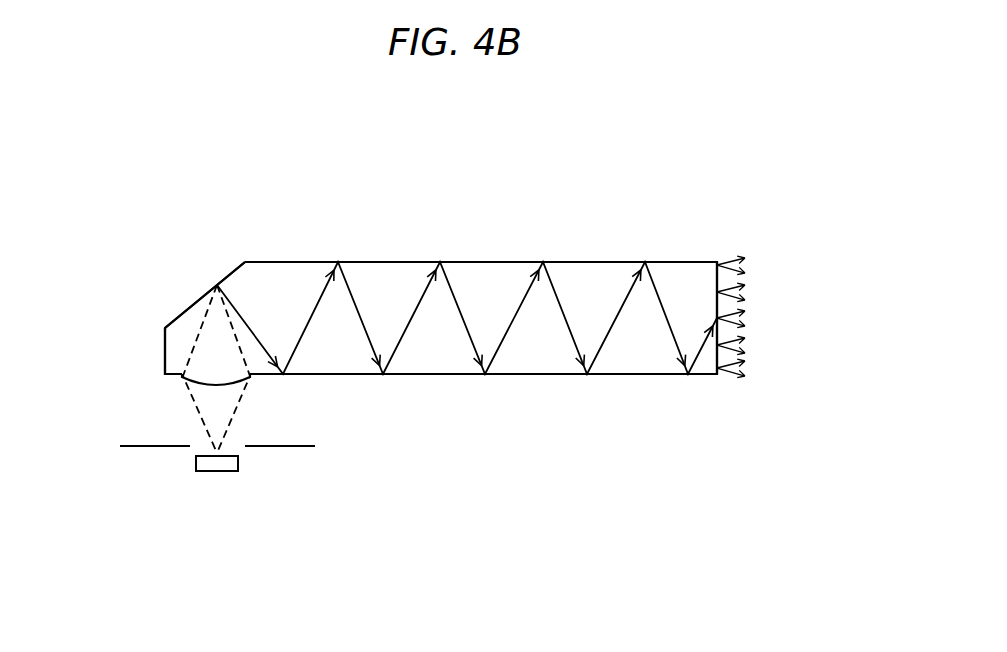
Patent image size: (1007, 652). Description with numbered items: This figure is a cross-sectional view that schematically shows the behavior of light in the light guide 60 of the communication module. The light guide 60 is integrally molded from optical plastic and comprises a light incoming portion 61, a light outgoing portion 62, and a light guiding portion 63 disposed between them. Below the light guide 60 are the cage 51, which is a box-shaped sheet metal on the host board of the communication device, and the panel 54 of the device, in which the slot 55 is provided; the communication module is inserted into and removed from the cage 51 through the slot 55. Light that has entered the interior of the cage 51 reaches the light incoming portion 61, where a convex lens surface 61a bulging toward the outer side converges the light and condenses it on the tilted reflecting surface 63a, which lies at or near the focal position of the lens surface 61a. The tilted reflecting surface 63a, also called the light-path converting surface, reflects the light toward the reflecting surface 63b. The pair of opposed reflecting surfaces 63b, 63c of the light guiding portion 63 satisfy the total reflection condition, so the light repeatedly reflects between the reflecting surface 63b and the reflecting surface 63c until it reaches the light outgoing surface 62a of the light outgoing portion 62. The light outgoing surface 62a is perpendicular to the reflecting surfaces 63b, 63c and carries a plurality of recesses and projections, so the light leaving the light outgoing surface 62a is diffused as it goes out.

The cage 51 is at (302, 447).
The panel 54 is at (220, 472).
The slot 55 is at (198, 446).
The light guide 60 is at (463, 281).
The light incoming portion 61 is at (175, 378).
The lens surface 61a is at (230, 380).
The light outgoing portion 62 is at (753, 318).
The light outgoing surface 62a is at (717, 374).
The light guiding portion 63 is at (415, 257).
The tilted reflecting surface 63a is at (228, 280).
The reflecting surface 63b is at (518, 372).
The reflecting surface 63c is at (463, 264).